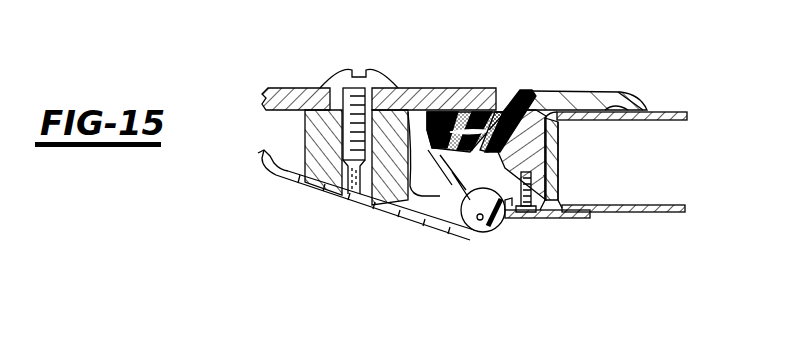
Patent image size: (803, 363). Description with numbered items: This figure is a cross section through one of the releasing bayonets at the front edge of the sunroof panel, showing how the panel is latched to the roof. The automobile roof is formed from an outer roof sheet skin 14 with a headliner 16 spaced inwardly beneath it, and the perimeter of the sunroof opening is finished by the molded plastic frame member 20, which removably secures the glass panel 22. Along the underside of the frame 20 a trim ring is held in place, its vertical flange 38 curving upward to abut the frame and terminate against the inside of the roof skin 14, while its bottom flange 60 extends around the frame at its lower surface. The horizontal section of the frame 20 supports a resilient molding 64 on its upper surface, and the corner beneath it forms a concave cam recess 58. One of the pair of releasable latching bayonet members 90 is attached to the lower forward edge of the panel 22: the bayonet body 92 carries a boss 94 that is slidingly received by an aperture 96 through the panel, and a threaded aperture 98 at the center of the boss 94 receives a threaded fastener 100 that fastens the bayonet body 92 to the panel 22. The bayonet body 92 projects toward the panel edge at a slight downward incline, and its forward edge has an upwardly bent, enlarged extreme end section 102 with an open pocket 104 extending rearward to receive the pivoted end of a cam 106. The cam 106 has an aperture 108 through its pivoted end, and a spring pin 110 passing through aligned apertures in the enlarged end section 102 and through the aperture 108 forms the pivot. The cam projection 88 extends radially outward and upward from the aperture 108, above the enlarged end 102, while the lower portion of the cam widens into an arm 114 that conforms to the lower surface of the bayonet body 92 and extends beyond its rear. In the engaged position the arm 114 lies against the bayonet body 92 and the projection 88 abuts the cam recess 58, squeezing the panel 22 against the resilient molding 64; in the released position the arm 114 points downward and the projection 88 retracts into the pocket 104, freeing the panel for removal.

The roof sheet skin 14 is at (678, 112).
The headliner 16 is at (662, 205).
The frame member 20 is at (588, 84).
The panel 22 is at (272, 88).
The vertical flange 38 is at (556, 164).
The cam recess 58 is at (466, 144).
The bottom flange 60 is at (577, 220).
The resilient molding 64 is at (503, 90).
The cam projection 88 is at (522, 155).
The releasable latching bayonet member 90 is at (291, 196).
The bayonet body 92 is at (323, 172).
The boss 94 is at (398, 90).
The aperture 96 is at (388, 96).
The threaded aperture 98 is at (385, 132).
The threaded fastener 100 is at (376, 74).
The enlarged extreme end section 102 is at (497, 222).
The open pocket 104 is at (347, 208).
The cam 106 is at (494, 232).
The aperture 108 is at (496, 252).
The spring pin 110 is at (470, 238).
The arm 114 is at (262, 152).